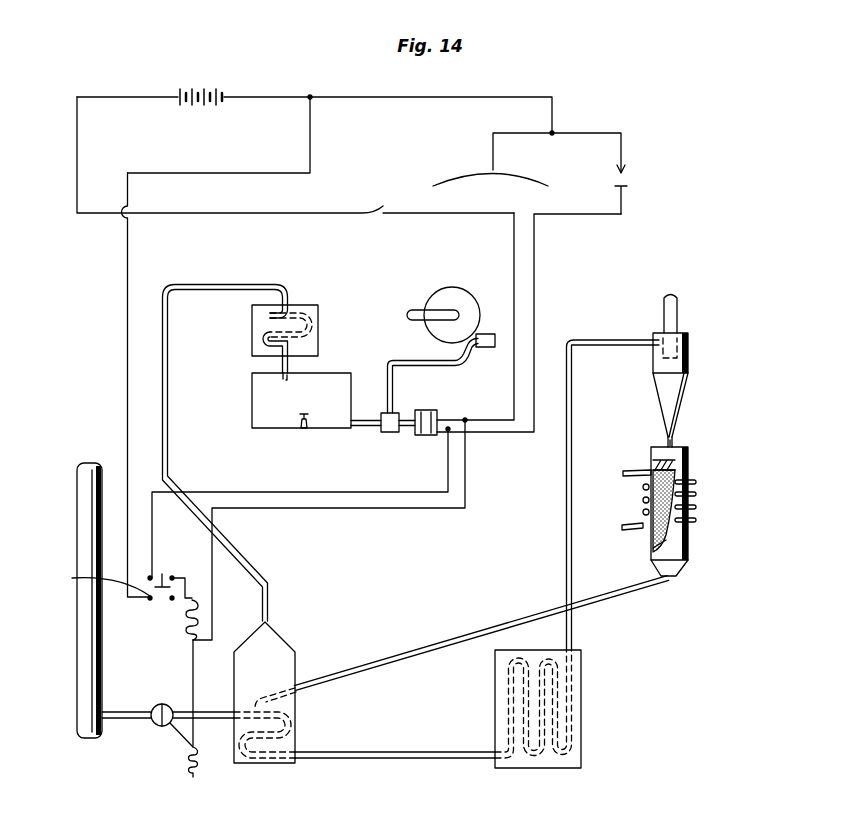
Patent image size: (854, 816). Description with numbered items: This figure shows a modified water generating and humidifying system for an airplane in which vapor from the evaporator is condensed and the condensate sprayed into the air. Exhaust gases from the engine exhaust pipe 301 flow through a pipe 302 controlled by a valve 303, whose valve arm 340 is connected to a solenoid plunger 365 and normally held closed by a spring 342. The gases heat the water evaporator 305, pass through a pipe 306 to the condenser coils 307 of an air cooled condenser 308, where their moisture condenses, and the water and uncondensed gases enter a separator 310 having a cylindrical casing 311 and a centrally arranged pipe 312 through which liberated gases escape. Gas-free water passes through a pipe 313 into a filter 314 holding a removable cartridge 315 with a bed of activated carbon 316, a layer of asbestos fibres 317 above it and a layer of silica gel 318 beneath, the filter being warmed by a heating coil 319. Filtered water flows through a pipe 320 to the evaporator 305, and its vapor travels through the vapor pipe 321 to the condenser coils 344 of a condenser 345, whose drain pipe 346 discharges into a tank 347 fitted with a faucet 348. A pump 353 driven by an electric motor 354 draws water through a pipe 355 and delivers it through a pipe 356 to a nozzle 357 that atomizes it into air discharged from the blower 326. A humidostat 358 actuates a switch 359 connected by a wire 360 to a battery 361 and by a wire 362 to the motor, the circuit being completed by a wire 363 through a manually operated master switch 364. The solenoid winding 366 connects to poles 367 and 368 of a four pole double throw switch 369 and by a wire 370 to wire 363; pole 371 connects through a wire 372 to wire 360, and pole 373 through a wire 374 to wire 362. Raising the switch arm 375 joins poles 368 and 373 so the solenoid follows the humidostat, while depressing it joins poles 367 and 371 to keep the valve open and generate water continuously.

The exhaust pipe 301 is at (77, 670).
The pipe 302 is at (145, 710).
The valve 303 is at (170, 705).
The water evaporator 305 is at (297, 712).
The pipe 306 is at (446, 752).
The condenser coils 307 is at (572, 742).
The air cooled condenser 308 is at (581, 708).
The separator 310 is at (652, 380).
The cylindrical casing 311 is at (689, 362).
The centrally arranged pipe 312 is at (677, 312).
The pipe 313 is at (675, 445).
The filter 314 is at (689, 465).
The removable cartridge 315 is at (660, 462).
The bed of activated carbon 316 is at (643, 505).
The layer of asbestos fibres 317 is at (652, 468).
The layer of silica gel 318 is at (652, 550).
The heating coil 319 is at (697, 508).
The pipe 320 is at (465, 630).
The vapor pipe 321 is at (238, 283).
The supercharging blower 326 is at (468, 290).
The valve arm 340 is at (182, 735).
The spring 342 is at (190, 760).
The condenser coils 344 is at (318, 324).
The condenser 345 is at (262, 338).
The drain pipe 346 is at (281, 365).
The tank 347 is at (252, 394).
The faucet 348 is at (302, 425).
The pump 353 is at (390, 432).
The electric motor 354 is at (427, 436).
The pipe 355 is at (365, 426).
The pipe 356 is at (392, 383).
The nozzle 357 is at (481, 348).
The humidostat 358 is at (515, 182).
The switch 359 is at (628, 178).
The wire 360 is at (420, 96).
The battery 361 is at (212, 90).
The wire 362 is at (612, 215).
The wire 363 is at (78, 140).
The master switch 364 is at (383, 206).
The solenoid plunger 365 is at (193, 657).
The solenoid winding 366 is at (190, 636).
The pole 367 is at (171, 600).
The pole 368 is at (182, 578).
The four pole double throw switch 369 is at (148, 601).
The wire 370 is at (382, 510).
The pole 371 is at (95, 582).
The wire 372 is at (127, 356).
The pole 373 is at (152, 576).
The wire 374 is at (150, 492).
The switch arm 375 is at (165, 574).